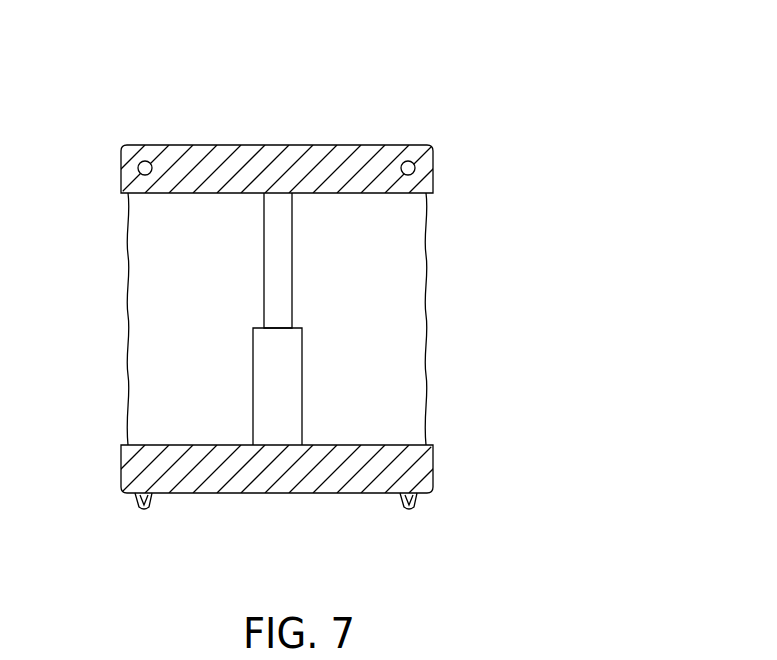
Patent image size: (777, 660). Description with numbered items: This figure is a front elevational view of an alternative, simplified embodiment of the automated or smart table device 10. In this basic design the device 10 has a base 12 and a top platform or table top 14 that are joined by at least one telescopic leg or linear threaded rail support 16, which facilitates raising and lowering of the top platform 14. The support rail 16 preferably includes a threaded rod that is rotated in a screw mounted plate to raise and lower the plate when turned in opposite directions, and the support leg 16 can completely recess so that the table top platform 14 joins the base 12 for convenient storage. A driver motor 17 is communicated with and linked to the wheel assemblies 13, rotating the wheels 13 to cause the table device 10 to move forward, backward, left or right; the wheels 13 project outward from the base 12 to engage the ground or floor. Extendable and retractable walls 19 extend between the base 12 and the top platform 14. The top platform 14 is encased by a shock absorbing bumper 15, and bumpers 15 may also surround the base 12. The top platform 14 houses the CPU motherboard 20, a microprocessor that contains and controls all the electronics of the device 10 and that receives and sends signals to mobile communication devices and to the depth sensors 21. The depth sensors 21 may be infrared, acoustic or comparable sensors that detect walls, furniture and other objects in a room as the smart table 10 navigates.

The automated table device 10 is at (520, 60).
The base 12 is at (278, 493).
The wheels 13 is at (146, 503).
The table top platform 14 is at (327, 145).
The bumper 15 is at (433, 465).
The telescopic leg or linear threaded rail support 16 is at (303, 323).
The driver motor 17 is at (302, 362).
The extendable and retractable wall 19 is at (128, 256).
The microprocessor or CPU 20 is at (208, 135).
The depth sensor 21 is at (138, 168).